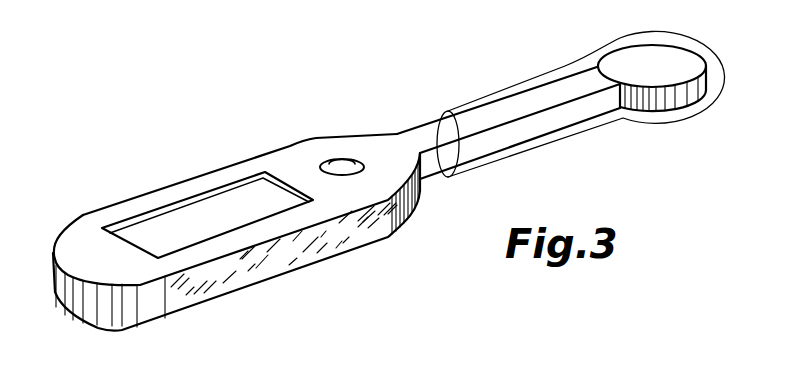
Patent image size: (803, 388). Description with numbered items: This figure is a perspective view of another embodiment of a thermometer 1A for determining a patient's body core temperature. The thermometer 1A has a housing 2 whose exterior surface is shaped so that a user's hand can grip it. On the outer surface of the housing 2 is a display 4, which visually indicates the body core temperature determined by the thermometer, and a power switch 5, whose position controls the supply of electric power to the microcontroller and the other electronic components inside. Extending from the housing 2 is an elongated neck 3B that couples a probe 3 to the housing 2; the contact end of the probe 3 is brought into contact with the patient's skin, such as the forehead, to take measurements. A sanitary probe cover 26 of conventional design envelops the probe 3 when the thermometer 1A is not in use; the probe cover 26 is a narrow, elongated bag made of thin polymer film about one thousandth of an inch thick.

The thermometer 1A is at (182, 85).
The housing 2 is at (92, 220).
The display 4 is at (243, 198).
The power switch 5 is at (344, 157).
The elongated neck 3B is at (485, 115).
The probe 3 is at (615, 50).
The sanitary probe cover 26 is at (617, 125).